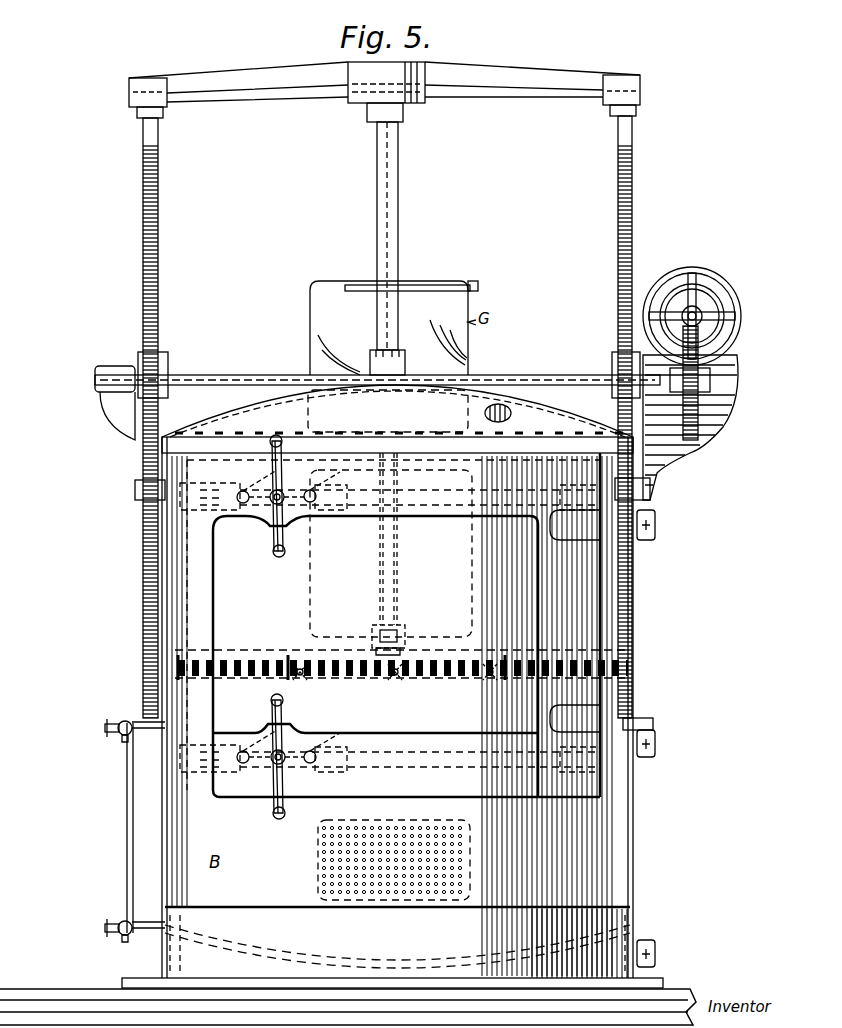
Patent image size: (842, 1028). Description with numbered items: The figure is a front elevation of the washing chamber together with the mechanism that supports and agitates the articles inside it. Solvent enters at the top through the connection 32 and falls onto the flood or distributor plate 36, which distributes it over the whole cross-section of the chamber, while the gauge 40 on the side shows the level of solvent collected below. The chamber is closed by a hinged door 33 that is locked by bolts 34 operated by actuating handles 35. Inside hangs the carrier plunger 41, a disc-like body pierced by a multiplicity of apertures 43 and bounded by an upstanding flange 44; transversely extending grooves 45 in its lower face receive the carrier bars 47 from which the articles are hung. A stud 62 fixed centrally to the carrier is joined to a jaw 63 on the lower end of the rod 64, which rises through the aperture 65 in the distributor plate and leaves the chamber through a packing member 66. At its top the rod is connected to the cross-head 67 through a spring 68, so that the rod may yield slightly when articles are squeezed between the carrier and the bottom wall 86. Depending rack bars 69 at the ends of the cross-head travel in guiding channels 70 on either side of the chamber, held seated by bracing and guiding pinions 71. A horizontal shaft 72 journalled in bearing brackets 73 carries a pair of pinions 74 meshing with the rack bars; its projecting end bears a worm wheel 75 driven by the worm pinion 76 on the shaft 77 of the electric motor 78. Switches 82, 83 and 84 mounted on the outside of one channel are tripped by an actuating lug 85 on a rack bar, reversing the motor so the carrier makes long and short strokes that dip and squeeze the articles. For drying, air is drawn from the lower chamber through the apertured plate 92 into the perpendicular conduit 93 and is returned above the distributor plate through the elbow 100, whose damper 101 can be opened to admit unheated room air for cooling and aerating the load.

The connection 32 is at (500, 406).
The hinged door 33 is at (393, 625).
The bolts 34 is at (200, 502).
The actuating handles 35 is at (282, 556).
The flood or distributor plate 36 is at (229, 432).
The gauge 40 is at (127, 821).
The carrier plunger 41 is at (260, 655).
The apertures 43 is at (505, 655).
The upstanding flange 44 is at (182, 656).
The transversely extending grooves 45 is at (291, 655).
The carrier bars 47 is at (305, 682).
The stud 62 is at (405, 632).
The jaw 63 is at (375, 630).
The rod 64 is at (377, 232).
The aperture 65 is at (372, 422).
The packing member 66 is at (372, 358).
The cross-head 67 is at (270, 72).
The spring 68 is at (280, 100).
The rack bars 69 is at (143, 222).
The guiding grooves or channels 70 is at (160, 580).
The bracing and guiding pinions 71 is at (135, 490).
The horizontal shaft 72 is at (570, 374).
The bearing brackets 73 is at (118, 410).
The pinions 74 is at (148, 365).
The worm wheel 75 is at (720, 405).
The worm pinion 76 is at (715, 330).
The shaft 77 is at (701, 316).
The electric motor 78 is at (704, 278).
The switch 82 is at (655, 535).
The switch 83 is at (655, 750).
The switch 84 is at (656, 956).
The actuating lug 85 is at (653, 722).
The bottom wall 86 is at (280, 946).
The apertured plate 92 is at (398, 829).
The perpendicular conduit 93 is at (470, 578).
The elbow 100 is at (325, 292).
The damper 101 is at (405, 288).